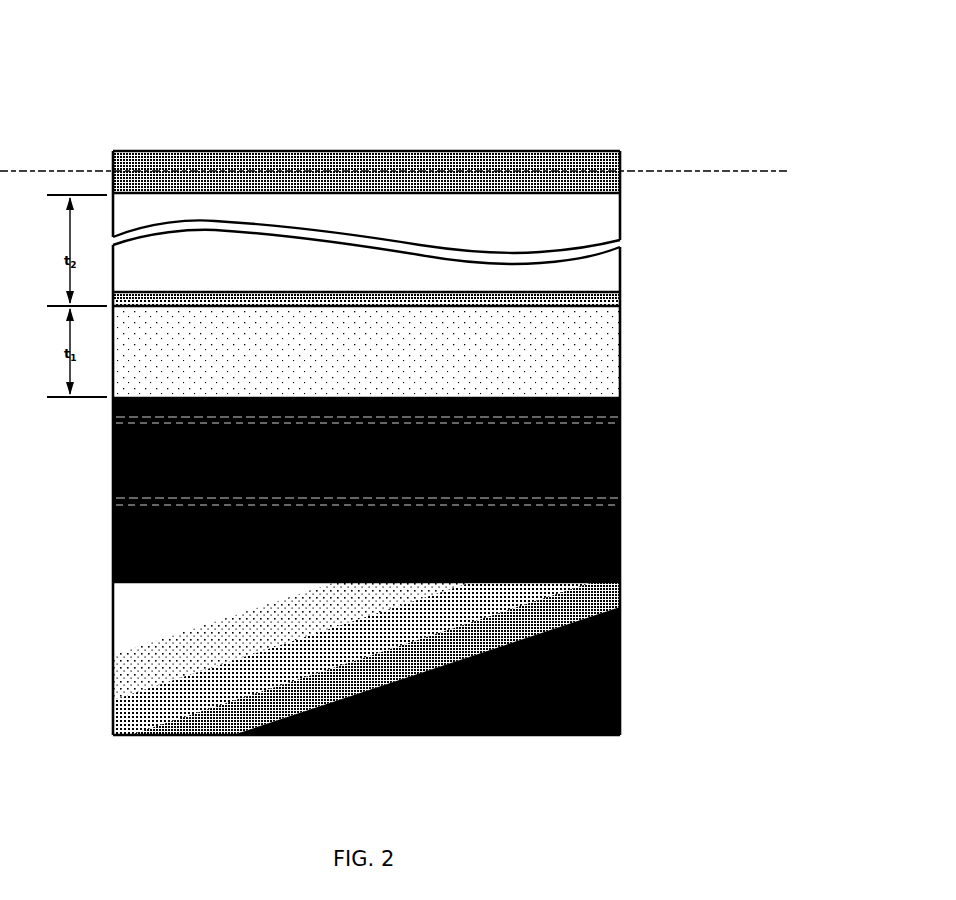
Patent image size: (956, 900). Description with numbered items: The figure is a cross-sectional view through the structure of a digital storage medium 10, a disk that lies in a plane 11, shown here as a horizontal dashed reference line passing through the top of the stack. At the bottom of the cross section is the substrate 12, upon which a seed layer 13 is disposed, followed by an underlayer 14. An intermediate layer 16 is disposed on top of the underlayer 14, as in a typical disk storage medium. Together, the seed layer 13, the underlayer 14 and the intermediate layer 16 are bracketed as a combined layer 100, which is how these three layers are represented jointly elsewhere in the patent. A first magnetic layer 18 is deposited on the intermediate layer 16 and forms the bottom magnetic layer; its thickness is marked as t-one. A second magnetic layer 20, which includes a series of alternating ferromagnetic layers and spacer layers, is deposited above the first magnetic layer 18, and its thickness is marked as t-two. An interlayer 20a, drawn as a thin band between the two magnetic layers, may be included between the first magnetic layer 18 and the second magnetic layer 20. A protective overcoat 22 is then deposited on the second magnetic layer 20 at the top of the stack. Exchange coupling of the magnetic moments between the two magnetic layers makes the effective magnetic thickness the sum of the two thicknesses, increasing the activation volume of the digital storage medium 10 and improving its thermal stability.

The digital storage medium 10 is at (491, 102).
The plane 11 is at (692, 172).
The substrate 12 is at (366, 659).
The seed layer 13 is at (366, 543).
The underlayer 14 is at (366, 460).
The intermediate layer 16 is at (622, 408).
The first magnetic layer 18 is at (366, 352).
The second magnetic layer 20 is at (366, 248).
The interlayer 20a is at (607, 300).
The protective overcoat 22 is at (604, 166).
The combined layer 100 is at (432, 490).